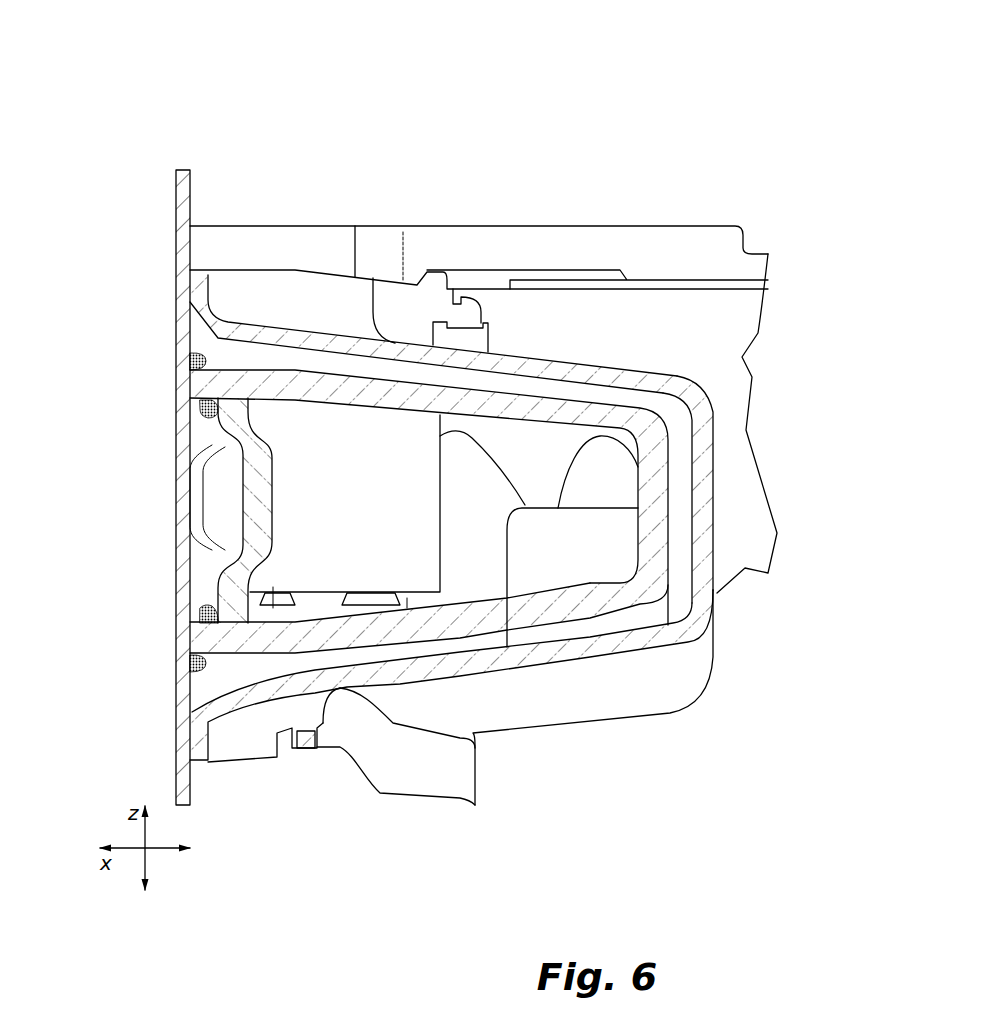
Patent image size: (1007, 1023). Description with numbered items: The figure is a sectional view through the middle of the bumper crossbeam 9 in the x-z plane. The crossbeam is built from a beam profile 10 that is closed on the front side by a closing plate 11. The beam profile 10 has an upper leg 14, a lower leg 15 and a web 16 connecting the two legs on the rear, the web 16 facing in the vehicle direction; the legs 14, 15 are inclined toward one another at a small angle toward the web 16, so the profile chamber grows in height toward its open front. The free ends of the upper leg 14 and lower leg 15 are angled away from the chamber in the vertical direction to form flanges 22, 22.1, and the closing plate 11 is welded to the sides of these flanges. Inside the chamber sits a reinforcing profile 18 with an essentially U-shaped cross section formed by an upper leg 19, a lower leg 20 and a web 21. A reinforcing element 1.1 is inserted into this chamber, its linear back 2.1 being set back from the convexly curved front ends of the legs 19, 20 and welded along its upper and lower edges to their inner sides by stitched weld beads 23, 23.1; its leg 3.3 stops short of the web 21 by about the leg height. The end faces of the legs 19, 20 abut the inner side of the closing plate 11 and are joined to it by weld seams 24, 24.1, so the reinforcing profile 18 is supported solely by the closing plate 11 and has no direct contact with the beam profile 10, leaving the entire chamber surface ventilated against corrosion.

The bumper crossbeam 9 is at (596, 202).
The beam profile 10 is at (515, 475).
The closing plate 11 is at (174, 251).
The upper leg 14 is at (496, 350).
The lower leg 15 is at (588, 664).
The web 16 is at (721, 495).
The reinforcing profile 18 is at (336, 364).
The upper leg 19 is at (564, 392).
The lower leg 20 is at (454, 642).
The web 21 is at (631, 514).
The flange 22 is at (256, 304).
The flange 22.1 is at (273, 752).
The weld bead 23 is at (201, 601).
The weld bead 23.1 is at (201, 424).
The weld seam 24 is at (196, 675).
The weld seam 24.1 is at (196, 348).
The reinforcing element 1.1 is at (230, 520).
The back 2.1 is at (285, 499).
The leg 3.3 is at (349, 510).